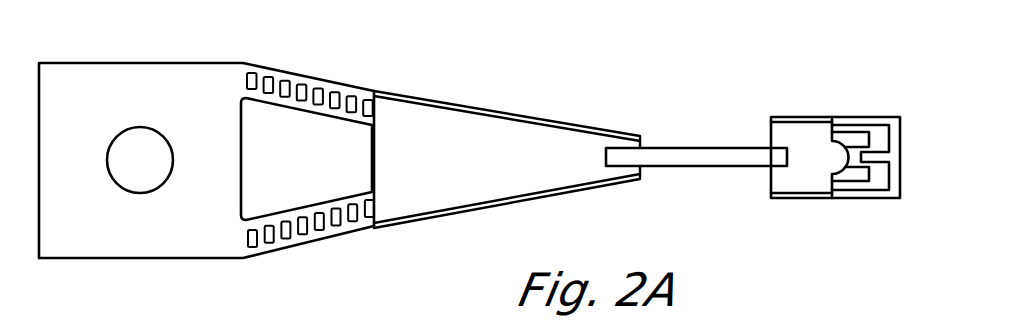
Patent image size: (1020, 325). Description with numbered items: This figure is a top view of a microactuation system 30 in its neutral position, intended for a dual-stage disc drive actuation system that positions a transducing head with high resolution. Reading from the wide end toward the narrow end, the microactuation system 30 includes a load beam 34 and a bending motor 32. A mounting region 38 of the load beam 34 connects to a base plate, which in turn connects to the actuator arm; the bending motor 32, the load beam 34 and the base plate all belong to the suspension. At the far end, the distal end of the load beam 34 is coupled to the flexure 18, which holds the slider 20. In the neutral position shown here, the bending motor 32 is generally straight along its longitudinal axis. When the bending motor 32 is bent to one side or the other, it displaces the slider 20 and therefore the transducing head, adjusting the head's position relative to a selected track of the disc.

The flexure 18 is at (857, 128).
The slider 20 is at (864, 172).
The microactuation system 30 is at (128, 54).
The bending motor 32 is at (707, 160).
The load beam 34 is at (406, 74).
The mounting region 38 is at (88, 242).